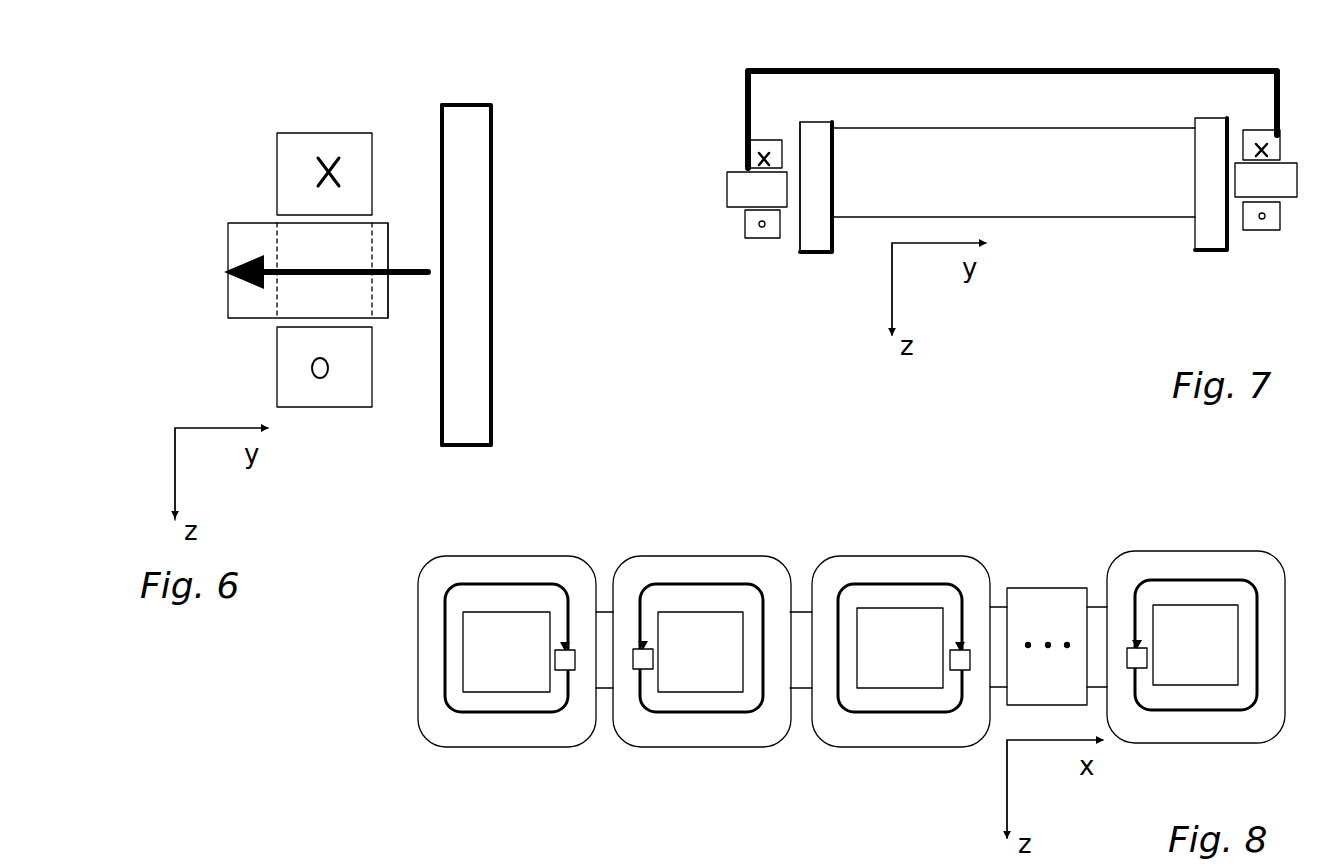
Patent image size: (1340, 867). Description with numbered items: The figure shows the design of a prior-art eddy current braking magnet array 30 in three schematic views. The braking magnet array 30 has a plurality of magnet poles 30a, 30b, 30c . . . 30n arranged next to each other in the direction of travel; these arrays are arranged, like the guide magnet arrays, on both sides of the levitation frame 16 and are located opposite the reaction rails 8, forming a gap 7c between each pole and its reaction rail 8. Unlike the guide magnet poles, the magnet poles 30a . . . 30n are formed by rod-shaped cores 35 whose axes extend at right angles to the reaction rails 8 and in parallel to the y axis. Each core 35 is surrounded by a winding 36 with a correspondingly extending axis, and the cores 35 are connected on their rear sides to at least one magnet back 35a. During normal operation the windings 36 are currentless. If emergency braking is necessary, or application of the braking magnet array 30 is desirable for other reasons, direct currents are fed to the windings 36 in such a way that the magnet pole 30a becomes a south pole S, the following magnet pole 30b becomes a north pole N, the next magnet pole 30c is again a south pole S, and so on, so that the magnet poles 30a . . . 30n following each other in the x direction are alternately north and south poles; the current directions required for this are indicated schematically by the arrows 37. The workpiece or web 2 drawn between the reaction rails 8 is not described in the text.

In FIG. 7, the workpiece / web 2 is at (1042, 190).
In FIG. 6, the gap 7c is at (425, 303).
In FIG. 7, the gap 7c is at (795, 202).
In FIG. 6, the reaction rail 8 is at (482, 370).
In FIG. 7, the reaction rail 8 is at (817, 230).
In FIG. 7, the levitation frame 16 is at (1043, 62).
In FIG. 6, the braking magnet array 30 is at (259, 237).
In FIG. 7, the braking magnet array 30 is at (971, 240).
In FIG. 6, the magnet pole 30a is at (393, 241).
In FIG. 8, the magnet pole 30a is at (461, 647).
In FIG. 8, the magnet pole 30b is at (707, 573).
In FIG. 8, the magnet pole 30c is at (932, 609).
In FIG. 8, the magnet pole 30n is at (1148, 570).
In FIG. 6, the rod-shaped core 35 is at (295, 297).
In FIG. 7, the rod-shaped core 35 is at (737, 193).
In FIG. 8, the rod-shaped core 35 is at (477, 658).
In FIG. 6, the magnet carrier 35a is at (237, 245).
In FIG. 8, the magnet carrier 35a is at (797, 660).
In FIG. 6, the winding 36 is at (328, 148).
In FIG. 7, the winding 36 is at (747, 233).
In FIG. 8, the winding 36 is at (447, 735).
In FIG. 8, the arrow 37 is at (928, 587).